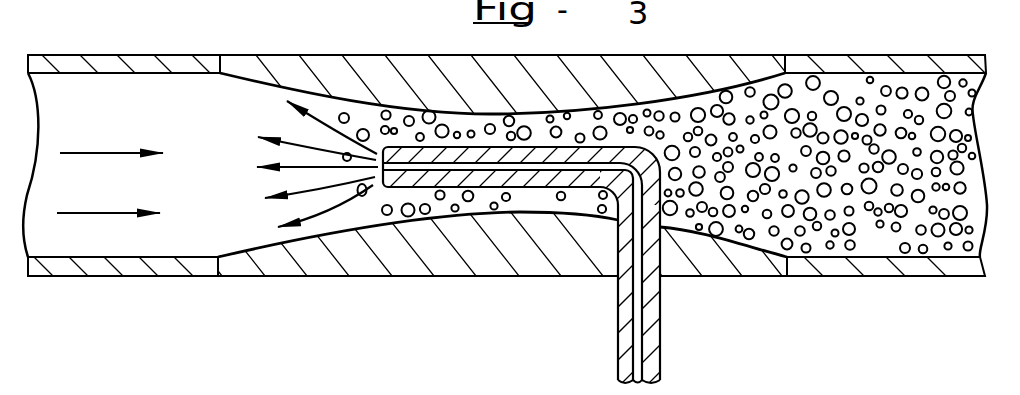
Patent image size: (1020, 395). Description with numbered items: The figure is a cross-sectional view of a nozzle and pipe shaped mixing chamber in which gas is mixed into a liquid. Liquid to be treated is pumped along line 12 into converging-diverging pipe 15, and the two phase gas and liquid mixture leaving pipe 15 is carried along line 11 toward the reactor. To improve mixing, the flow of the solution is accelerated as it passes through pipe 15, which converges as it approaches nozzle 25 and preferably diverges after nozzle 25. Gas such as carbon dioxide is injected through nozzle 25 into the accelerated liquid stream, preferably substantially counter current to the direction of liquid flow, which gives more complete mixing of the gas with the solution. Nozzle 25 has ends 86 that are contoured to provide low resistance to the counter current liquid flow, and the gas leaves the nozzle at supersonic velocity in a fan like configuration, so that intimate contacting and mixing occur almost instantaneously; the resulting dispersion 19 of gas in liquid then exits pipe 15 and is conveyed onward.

The line 11 is at (927, 267).
The line 12 is at (132, 267).
The converging-diverging pipe 15 is at (378, 243).
The agglomerated particle stream 19 is at (797, 187).
The nozzle 25 is at (507, 180).
The ends 86 is at (383, 157).